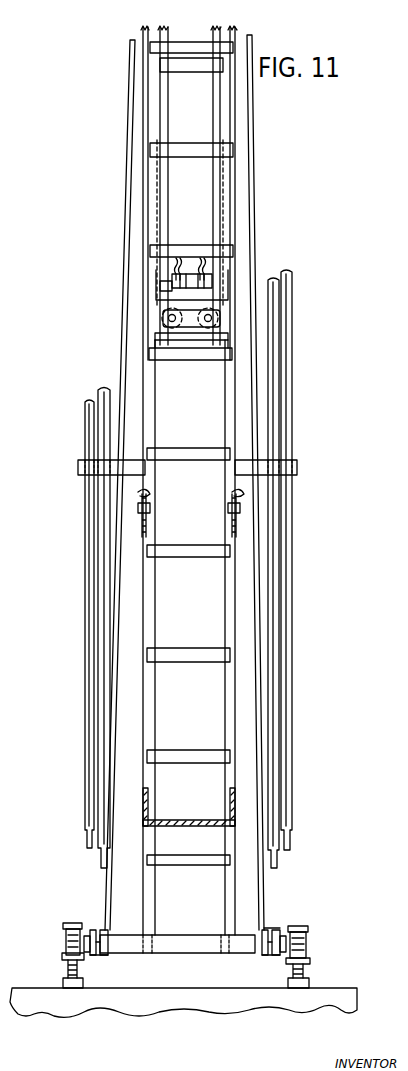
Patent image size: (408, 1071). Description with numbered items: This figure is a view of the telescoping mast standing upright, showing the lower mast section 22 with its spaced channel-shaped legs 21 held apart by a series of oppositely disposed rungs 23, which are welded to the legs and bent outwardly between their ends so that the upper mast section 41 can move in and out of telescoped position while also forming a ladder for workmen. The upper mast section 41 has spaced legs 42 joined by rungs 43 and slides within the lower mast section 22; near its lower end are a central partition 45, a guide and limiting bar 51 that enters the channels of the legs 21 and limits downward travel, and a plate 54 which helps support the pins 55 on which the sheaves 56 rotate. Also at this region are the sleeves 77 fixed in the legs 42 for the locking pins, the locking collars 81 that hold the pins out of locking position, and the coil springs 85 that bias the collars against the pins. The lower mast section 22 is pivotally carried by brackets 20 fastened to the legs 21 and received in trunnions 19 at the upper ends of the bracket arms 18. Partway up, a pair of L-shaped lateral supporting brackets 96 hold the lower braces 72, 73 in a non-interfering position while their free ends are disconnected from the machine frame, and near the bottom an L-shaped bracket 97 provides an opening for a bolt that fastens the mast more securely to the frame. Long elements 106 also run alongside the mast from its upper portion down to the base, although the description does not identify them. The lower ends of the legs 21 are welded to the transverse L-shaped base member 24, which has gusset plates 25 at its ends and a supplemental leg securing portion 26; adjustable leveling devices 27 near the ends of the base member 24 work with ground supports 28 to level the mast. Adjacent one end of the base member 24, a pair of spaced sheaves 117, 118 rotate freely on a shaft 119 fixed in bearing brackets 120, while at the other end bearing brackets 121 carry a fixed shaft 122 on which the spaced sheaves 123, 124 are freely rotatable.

The bracket arm 18 is at (143, 536).
The trunnion 19 is at (140, 512).
The bracket 20 is at (147, 490).
The leg 21 is at (152, 611).
The lower mast section 22 is at (248, 581).
The rung 23 is at (188, 451).
The base member 24 is at (282, 920).
The gusset plate 25 is at (64, 935).
The supplemental leg securing portion 26 is at (176, 934).
The adjustable leveling device 27 is at (62, 958).
The ground support 28 is at (222, 968).
The upper mast section 41 is at (222, 120).
The leg 42 is at (170, 124).
The rung 43 is at (201, 70).
The central partition 45 is at (165, 291).
The guide and limiting bar 51 is at (194, 346).
The plate 54 is at (165, 313).
The pin 55 is at (168, 323).
The sheave 56 is at (170, 329).
The lower brace 72 is at (99, 796).
The lower brace 73 is at (91, 790).
The sleeve 77 is at (178, 279).
The locking collar 81 is at (166, 284).
The coil spring 85 is at (206, 272).
The lateral supporting bracket 96 is at (94, 462).
The bracket 97 is at (142, 803).
The brace rod 106 is at (124, 178).
The sheave 117 is at (92, 928).
The sheave 118 is at (96, 928).
The shaft 119 is at (84, 945).
The bearing bracket 120 is at (94, 955).
The bearing bracket 121 is at (270, 956).
The shaft 122 is at (287, 940).
The sheave 123 is at (264, 928).
The sheave 124 is at (282, 928).